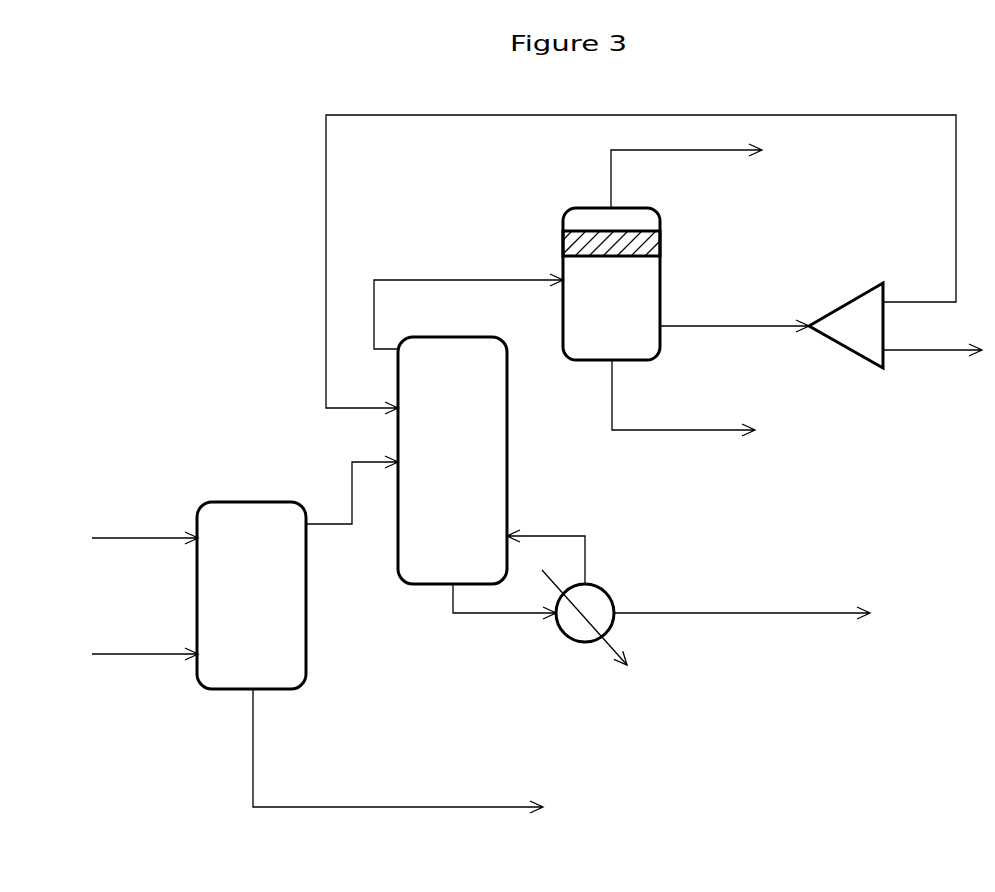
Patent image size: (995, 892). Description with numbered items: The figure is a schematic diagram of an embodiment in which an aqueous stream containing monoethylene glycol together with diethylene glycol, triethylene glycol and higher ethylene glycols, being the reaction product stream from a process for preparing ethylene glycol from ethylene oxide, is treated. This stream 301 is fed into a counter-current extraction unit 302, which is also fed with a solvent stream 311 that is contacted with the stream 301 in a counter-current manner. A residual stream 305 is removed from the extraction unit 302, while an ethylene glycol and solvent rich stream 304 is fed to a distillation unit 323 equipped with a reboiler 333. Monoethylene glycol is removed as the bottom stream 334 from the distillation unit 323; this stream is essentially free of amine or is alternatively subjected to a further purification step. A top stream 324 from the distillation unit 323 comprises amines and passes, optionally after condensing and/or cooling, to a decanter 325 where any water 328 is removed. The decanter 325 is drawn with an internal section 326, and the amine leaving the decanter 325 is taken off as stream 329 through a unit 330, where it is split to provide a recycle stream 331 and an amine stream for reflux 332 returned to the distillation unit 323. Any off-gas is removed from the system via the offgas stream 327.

The aqueous glycol stream 301 is at (145, 523).
The solvent stream 311 is at (145, 643).
The counter-current extraction unit 302 is at (251, 595).
The ethylene glycol and solvent rich stream 304 is at (347, 490).
The residual stream 305 is at (398, 751).
The distillation unit 323 is at (452, 460).
The top stream 324 is at (468, 301).
The decanter 325 is at (611, 284).
The demister / packing section 326 is at (658, 243).
The offgas stream 327 is at (686, 176).
The water 328 is at (683, 398).
The stream to compressor 329 is at (734, 315).
The compressor 330 is at (840, 326).
The recycle stream 331 is at (932, 363).
The amine stream for reflux 332 is at (641, 264).
The reboiler 333 is at (542, 599).
The bottom stream 334 is at (742, 599).